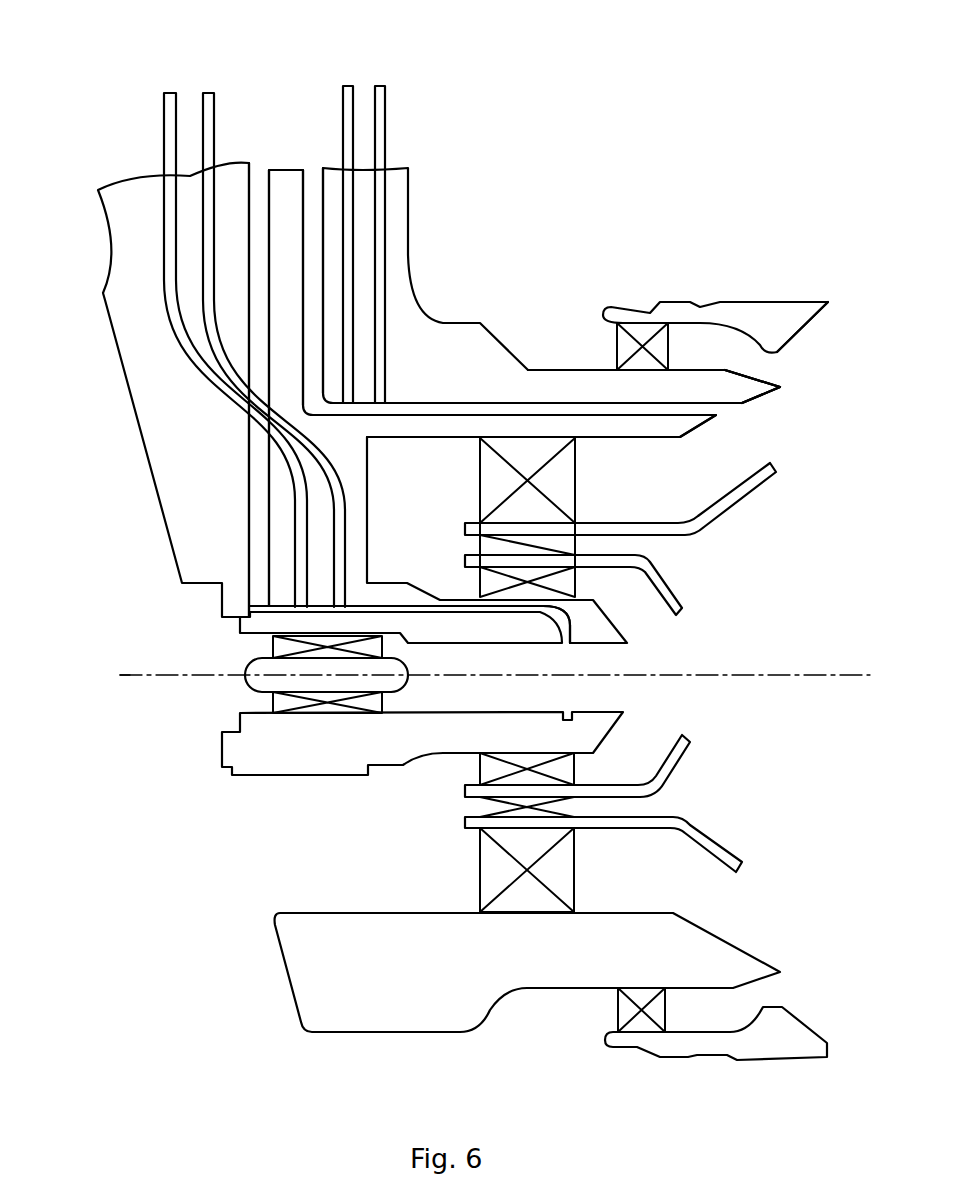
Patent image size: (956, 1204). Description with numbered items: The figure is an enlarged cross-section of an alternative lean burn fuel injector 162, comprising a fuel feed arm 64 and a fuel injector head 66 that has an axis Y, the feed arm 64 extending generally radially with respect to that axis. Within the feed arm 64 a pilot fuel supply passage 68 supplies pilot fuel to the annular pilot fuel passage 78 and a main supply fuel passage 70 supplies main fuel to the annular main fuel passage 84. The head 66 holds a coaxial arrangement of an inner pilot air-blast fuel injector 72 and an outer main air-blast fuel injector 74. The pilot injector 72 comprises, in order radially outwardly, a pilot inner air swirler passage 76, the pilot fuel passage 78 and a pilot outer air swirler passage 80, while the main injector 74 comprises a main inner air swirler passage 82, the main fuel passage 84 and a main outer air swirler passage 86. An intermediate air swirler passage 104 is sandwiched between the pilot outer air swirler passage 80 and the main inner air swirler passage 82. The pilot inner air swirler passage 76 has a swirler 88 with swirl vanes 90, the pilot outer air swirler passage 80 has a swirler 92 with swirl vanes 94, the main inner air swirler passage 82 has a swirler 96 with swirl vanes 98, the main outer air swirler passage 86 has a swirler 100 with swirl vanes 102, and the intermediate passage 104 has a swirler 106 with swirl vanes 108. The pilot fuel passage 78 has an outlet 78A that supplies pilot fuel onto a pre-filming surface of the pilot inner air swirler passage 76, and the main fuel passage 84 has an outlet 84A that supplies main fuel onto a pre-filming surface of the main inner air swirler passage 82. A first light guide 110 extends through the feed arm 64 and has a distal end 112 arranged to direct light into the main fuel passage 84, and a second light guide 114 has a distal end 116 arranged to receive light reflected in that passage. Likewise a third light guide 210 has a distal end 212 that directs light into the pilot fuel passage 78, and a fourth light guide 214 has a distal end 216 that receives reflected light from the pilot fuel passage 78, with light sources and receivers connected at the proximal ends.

The fuel feed arm 64 is at (400, 212).
The fuel injector head 66 is at (722, 300).
The pilot fuel supply passage 68 is at (262, 142).
The main supply fuel passage 70 is at (316, 142).
The inner pilot air-blast fuel injector 72 is at (281, 760).
The outer main air-blast fuel injector 74 is at (795, 380).
The pilot inner air swirler passage 76 is at (366, 694).
The pilot fuel passage 78 is at (385, 600).
The outlet 78A is at (565, 643).
The pilot outer air swirler passage 80 is at (595, 775).
The main inner air swirler passage 82 is at (563, 517).
The main fuel passage 84 is at (437, 407).
The outlet 84A is at (725, 405).
The main outer air swirler passage 86 is at (694, 346).
The swirler 88 is at (225, 685).
The swirl vanes 90 is at (273, 645).
The swirler 92 is at (470, 793).
The swirl vanes 94 is at (480, 763).
The swirler 96 is at (478, 873).
The swirl vanes 98 is at (565, 868).
The swirler 100 is at (622, 342).
The swirl vanes 102 is at (647, 327).
The intermediate air swirler passage 104 is at (640, 545).
The swirler 106 is at (470, 522).
The swirl vanes 108 is at (480, 833).
The first light guide 110 is at (344, 90).
The distal end 112 is at (347, 405).
The second light guide 114 is at (387, 112).
The distal end 116 is at (378, 407).
The lean burn fuel injector 162 is at (808, 262).
The third light guide 210 is at (166, 112).
The distal end 212 is at (250, 606).
The fourth light guide 214 is at (204, 112).
The distal end 216 is at (240, 633).
The axis y is at (130, 677).